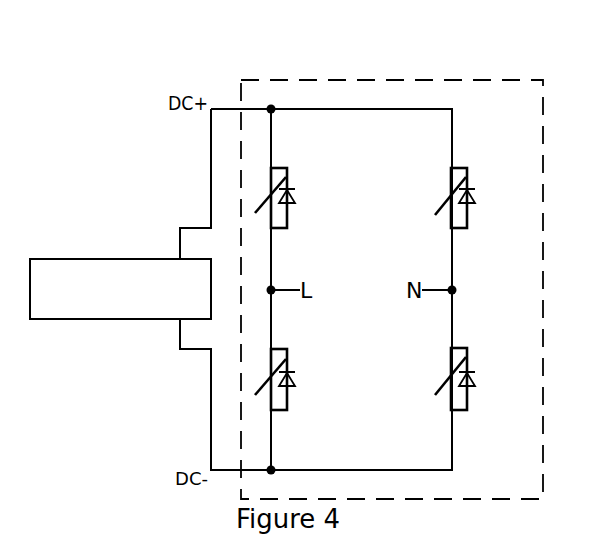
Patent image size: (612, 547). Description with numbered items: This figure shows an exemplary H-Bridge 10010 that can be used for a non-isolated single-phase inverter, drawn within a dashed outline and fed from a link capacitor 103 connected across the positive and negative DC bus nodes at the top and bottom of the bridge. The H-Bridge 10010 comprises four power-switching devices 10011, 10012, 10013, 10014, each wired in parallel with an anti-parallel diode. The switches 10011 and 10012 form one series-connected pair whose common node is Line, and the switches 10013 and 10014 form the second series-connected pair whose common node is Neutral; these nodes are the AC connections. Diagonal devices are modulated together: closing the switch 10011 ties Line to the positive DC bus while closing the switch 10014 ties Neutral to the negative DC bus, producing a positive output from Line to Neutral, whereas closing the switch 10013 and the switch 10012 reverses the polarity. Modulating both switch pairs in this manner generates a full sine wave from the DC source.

The link capacitor 103 is at (118, 259).
The H-Bridge 10010 is at (452, 78).
The power-switching device 10011 is at (283, 175).
The power-switching device 10012 is at (290, 370).
The power-switching device 10013 is at (465, 175).
The power-switching device 10014 is at (466, 355).